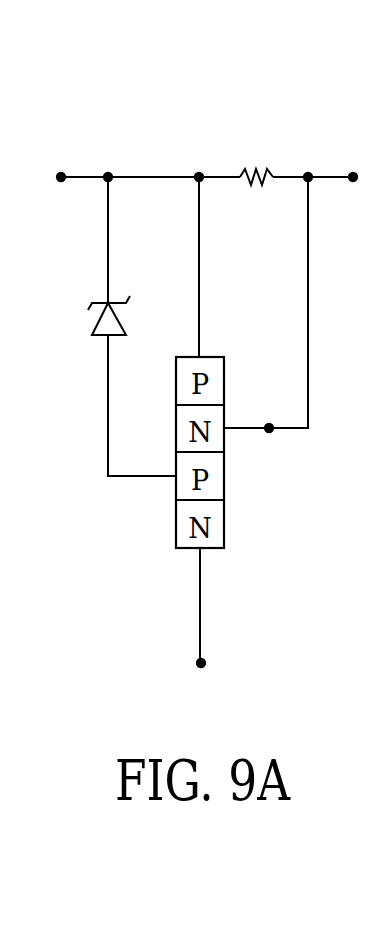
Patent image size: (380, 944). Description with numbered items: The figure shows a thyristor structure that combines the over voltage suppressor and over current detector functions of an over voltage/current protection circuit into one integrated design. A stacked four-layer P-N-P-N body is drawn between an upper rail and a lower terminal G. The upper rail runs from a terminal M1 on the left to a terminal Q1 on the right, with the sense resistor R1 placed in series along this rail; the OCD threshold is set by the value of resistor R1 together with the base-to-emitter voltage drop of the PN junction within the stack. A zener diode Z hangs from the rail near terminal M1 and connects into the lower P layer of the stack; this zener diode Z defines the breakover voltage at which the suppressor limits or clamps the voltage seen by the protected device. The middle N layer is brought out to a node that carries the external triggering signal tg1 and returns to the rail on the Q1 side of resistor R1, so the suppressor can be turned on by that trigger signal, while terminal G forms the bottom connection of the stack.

The first main terminal M1 is at (64, 159).
The second terminal Q1 is at (351, 159).
The sense resistor R1 is at (259, 196).
The zener diode Z is at (69, 320).
The external triggering signal tg1 is at (266, 305).
The gate G is at (217, 614).